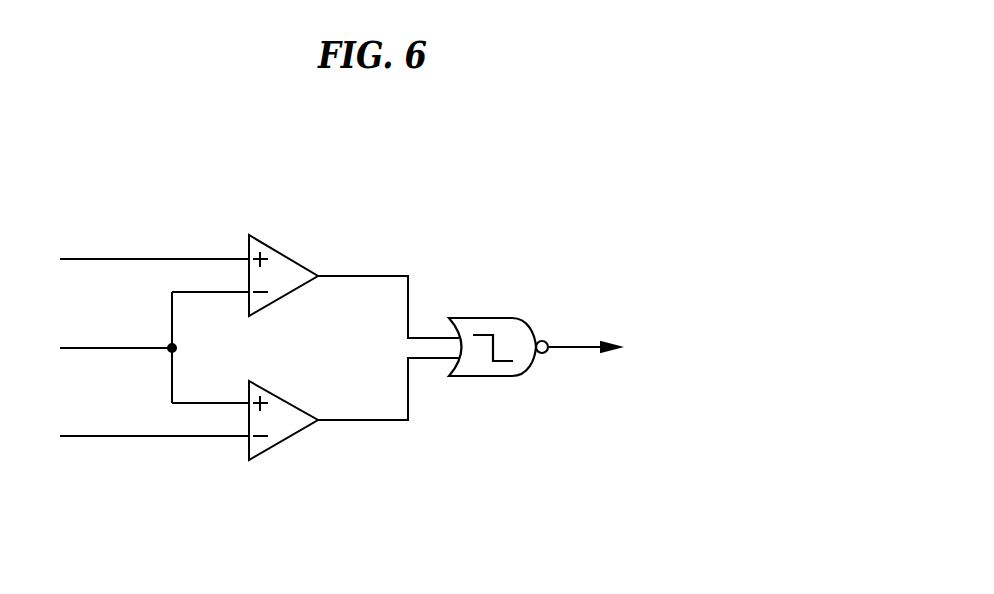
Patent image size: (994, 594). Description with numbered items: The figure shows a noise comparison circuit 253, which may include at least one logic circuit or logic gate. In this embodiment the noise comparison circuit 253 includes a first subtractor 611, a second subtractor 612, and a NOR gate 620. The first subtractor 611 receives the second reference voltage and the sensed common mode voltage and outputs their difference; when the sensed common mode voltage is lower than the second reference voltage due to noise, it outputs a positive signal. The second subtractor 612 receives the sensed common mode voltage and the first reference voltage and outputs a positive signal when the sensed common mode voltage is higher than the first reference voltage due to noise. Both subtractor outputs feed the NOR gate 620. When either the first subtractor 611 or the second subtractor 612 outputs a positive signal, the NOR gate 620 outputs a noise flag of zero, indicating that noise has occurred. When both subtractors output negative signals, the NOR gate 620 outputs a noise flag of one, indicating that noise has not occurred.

The noise comparison circuit 253 is at (663, 171).
The first subtractor 611 is at (292, 259).
The second subtractor 612 is at (292, 404).
The NOR gate 620 is at (488, 318).